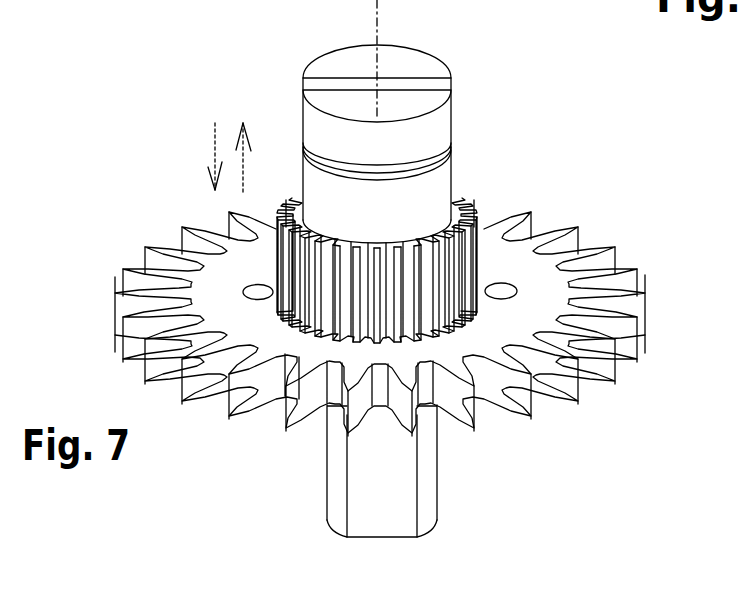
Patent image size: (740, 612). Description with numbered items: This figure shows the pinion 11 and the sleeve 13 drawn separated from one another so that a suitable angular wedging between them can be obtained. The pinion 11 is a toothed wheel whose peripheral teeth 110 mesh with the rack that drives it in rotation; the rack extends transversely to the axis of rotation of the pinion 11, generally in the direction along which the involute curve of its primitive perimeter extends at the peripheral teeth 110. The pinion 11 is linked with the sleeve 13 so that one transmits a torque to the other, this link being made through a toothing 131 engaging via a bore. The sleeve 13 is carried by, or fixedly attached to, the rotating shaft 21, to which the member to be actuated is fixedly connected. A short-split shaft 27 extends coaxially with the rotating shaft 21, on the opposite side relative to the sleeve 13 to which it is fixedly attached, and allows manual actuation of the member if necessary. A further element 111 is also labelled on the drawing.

The pinion 11 is at (162, 294).
The peripheral teeth 110 is at (558, 378).
The hub of gear wheel 111 is at (429, 327).
The sleeve 13 is at (478, 193).
The toothing 131 is at (478, 258).
The rotating shaft 21 is at (368, 492).
The short-split shaft 27 is at (310, 122).